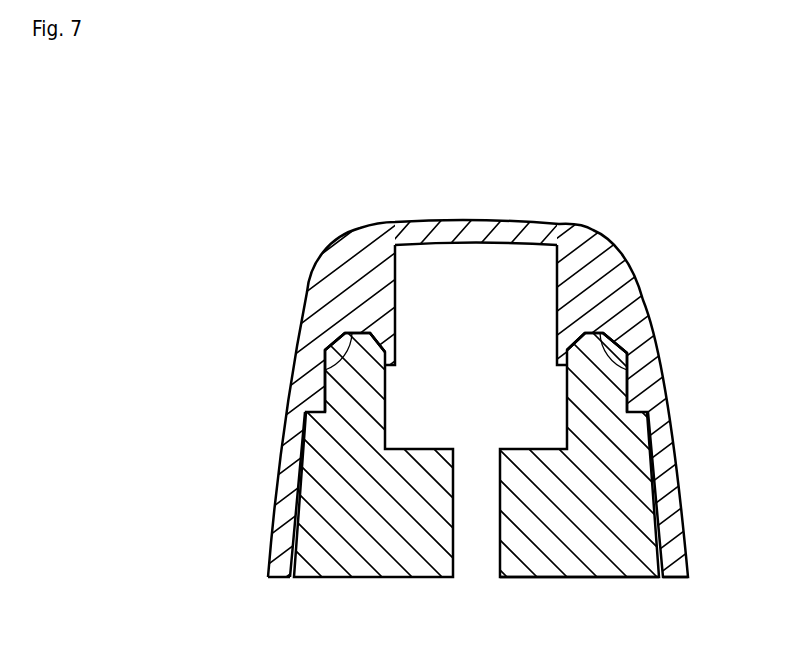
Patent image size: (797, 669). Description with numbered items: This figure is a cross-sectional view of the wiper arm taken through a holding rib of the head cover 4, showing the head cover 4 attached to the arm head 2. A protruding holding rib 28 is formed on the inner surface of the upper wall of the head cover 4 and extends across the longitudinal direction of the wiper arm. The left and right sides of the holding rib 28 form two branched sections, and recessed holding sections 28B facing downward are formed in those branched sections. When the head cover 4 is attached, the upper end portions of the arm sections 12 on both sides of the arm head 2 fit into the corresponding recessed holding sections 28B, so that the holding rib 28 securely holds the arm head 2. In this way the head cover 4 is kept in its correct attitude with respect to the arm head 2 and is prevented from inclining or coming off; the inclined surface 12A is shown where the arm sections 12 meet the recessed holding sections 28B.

The arm head 2 is at (557, 578).
The head cover 4 is at (597, 230).
The arm sections 12 is at (301, 434).
The inclined surface 12A is at (334, 347).
The holding rib 28 is at (378, 336).
The recessed holding sections 28B is at (326, 369).